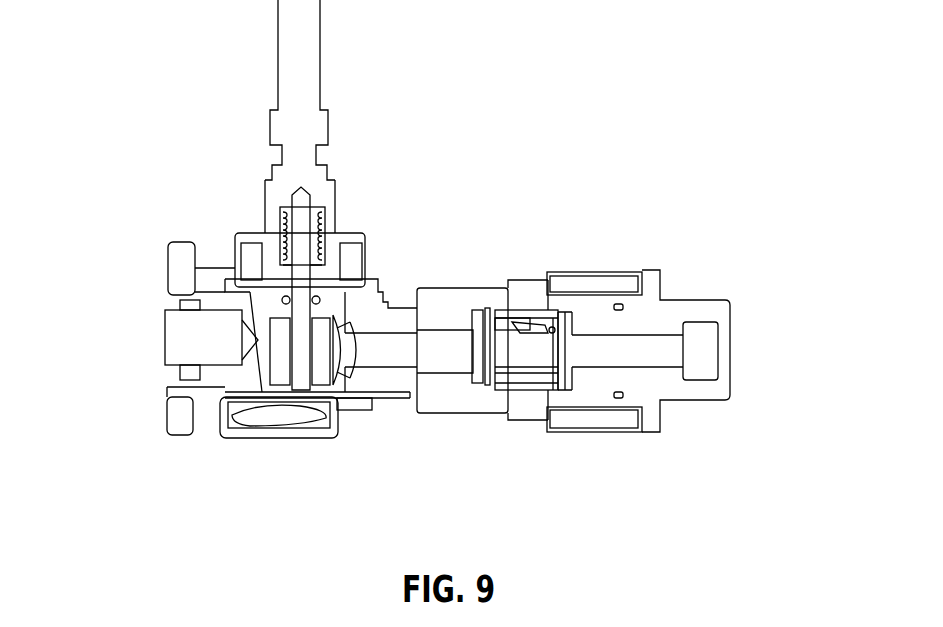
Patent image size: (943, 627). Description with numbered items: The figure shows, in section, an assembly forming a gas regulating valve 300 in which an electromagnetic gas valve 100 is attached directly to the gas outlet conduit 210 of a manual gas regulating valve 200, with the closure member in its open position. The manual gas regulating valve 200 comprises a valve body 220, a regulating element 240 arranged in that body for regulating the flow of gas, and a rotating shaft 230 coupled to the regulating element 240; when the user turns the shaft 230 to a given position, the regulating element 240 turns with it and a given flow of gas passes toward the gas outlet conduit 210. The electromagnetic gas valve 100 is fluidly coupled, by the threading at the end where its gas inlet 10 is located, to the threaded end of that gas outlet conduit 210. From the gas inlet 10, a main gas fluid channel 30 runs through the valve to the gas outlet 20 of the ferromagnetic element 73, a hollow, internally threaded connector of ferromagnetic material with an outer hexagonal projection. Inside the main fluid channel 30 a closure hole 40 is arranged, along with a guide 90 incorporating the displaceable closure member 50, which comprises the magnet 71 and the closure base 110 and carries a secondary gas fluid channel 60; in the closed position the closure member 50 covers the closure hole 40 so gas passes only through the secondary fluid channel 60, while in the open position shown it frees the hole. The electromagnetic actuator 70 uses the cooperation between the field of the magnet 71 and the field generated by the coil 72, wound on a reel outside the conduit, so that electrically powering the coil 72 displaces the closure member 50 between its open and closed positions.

The gas inlet 10 is at (443, 348).
The gas outlet 20 is at (703, 348).
The main gas fluid channel 30 is at (607, 348).
The closure hole 40 is at (573, 352).
The closure member 50 is at (538, 335).
The secondary gas fluid channel 60 is at (532, 322).
The electromagnetic actuator 70 is at (475, 203).
The magnet 71 is at (513, 328).
The coil 72 is at (570, 280).
The ferromagnetic element 73 is at (660, 303).
The guide 90 is at (550, 389).
The electromagnetic gas valve 100 is at (645, 182).
The closure base 110 is at (573, 385).
The manual gas regulating valve 200 is at (177, 152).
The gas outlet conduit 210 is at (400, 318).
The valve body 220 is at (248, 367).
The rotating shaft 230 is at (310, 42).
The regulating element 240 is at (273, 302).
The gas regulating valve 300 is at (569, 89).